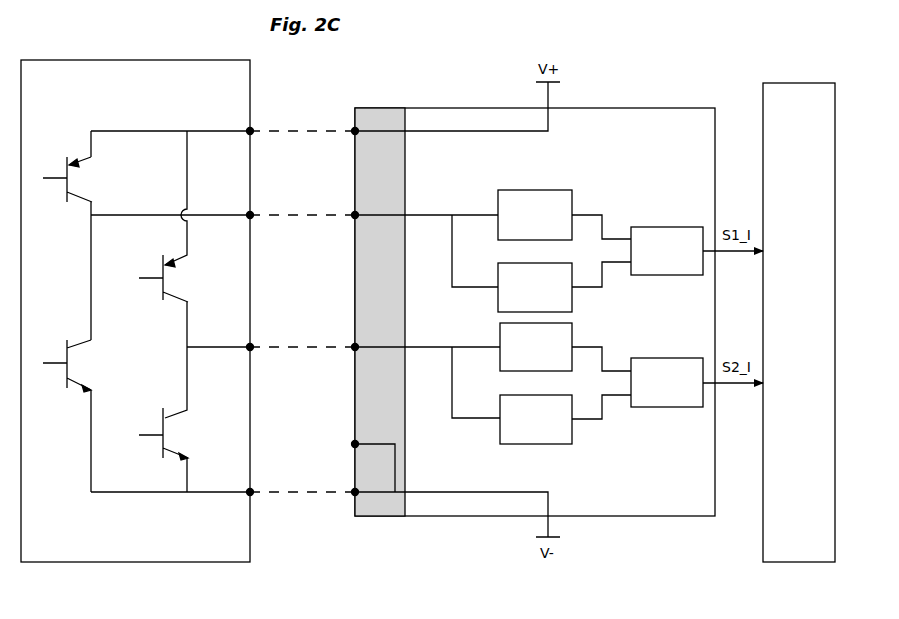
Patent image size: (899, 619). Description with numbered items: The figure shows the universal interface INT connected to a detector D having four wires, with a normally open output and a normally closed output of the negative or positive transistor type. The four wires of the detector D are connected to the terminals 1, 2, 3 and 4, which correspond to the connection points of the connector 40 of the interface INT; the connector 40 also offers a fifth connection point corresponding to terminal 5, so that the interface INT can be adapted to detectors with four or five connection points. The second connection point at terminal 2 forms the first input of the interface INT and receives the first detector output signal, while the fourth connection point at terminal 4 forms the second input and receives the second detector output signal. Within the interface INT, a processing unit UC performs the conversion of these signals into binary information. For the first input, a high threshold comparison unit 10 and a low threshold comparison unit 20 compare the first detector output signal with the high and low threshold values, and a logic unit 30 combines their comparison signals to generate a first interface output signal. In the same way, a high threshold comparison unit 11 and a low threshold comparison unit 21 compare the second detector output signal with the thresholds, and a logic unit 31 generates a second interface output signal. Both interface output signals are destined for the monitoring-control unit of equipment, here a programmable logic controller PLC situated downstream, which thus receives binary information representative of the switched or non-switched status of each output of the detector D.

The detector D is at (200, 60).
The universal interface INT is at (480, 93).
The connector 40 is at (375, 108).
The processing unit UC is at (615, 108).
The terminal 1 is at (448, 108).
The terminal 2 is at (417, 206).
The terminal 3 is at (448, 504).
The terminal 4 is at (418, 338).
The terminal 5 is at (366, 458).
The high threshold comparison unit 10 is at (564, 215).
The low threshold comparison unit 20 is at (564, 287).
The logic unit 30 is at (697, 251).
The high threshold comparison unit 11 is at (565, 347).
The low threshold comparison unit 21 is at (565, 419).
The logic unit 31 is at (697, 382).
The programmable logic controller PLC is at (799, 322).